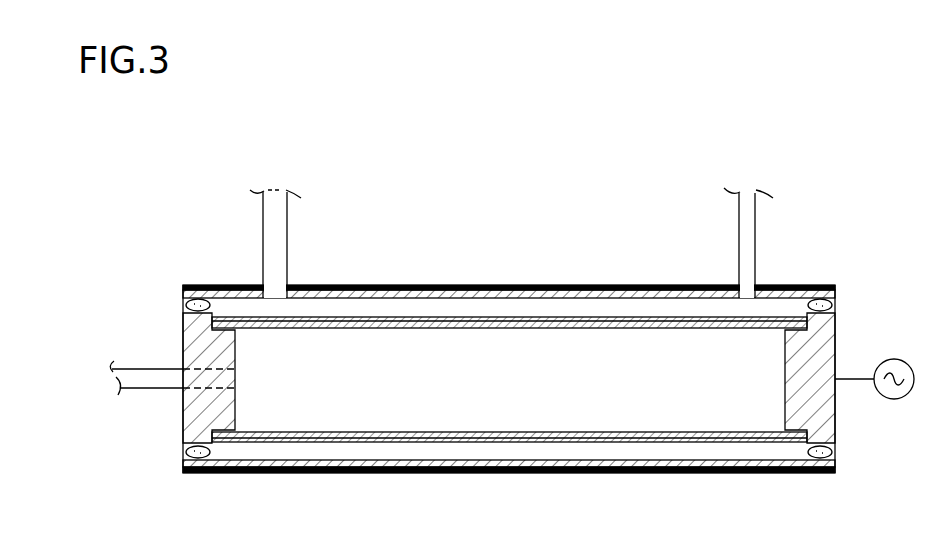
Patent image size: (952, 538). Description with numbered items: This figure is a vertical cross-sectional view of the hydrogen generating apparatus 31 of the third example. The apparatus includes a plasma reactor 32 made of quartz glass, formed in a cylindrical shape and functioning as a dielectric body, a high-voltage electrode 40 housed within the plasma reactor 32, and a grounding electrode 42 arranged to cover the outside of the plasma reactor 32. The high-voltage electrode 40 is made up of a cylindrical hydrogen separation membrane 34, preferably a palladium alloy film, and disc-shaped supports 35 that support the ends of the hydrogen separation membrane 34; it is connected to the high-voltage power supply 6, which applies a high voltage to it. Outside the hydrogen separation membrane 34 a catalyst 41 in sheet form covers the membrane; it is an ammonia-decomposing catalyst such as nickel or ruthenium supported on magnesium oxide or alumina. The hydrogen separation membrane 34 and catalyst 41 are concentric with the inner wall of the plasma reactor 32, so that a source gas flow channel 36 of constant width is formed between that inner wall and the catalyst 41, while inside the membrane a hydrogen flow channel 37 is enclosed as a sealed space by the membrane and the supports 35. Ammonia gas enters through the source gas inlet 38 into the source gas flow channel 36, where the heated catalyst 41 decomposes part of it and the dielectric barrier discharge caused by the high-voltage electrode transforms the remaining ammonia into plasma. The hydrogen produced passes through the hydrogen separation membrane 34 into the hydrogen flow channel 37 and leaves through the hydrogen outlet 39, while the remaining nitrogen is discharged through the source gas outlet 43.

The high-voltage power supply 6 is at (893, 359).
The hydrogen generating apparatus 31 is at (572, 186).
The plasma reactor 32 is at (478, 296).
The hydrogen separation membrane 34 is at (215, 341).
The supports 35 is at (197, 352).
The source gas flow channel 36 is at (362, 296).
The hydrogen flow channel 37 is at (509, 384).
The source gas inlet 38 is at (755, 243).
The hydrogen outlet 39 is at (157, 392).
The high-voltage electrode 40 is at (454, 371).
The catalyst 41 is at (650, 297).
The grounding electrode 42 is at (423, 296).
The source gas outlet 43 is at (263, 222).